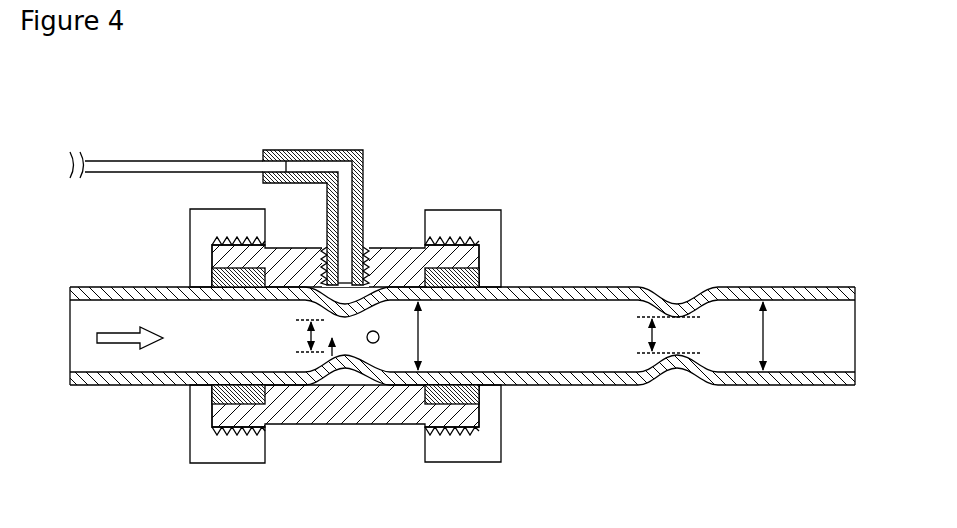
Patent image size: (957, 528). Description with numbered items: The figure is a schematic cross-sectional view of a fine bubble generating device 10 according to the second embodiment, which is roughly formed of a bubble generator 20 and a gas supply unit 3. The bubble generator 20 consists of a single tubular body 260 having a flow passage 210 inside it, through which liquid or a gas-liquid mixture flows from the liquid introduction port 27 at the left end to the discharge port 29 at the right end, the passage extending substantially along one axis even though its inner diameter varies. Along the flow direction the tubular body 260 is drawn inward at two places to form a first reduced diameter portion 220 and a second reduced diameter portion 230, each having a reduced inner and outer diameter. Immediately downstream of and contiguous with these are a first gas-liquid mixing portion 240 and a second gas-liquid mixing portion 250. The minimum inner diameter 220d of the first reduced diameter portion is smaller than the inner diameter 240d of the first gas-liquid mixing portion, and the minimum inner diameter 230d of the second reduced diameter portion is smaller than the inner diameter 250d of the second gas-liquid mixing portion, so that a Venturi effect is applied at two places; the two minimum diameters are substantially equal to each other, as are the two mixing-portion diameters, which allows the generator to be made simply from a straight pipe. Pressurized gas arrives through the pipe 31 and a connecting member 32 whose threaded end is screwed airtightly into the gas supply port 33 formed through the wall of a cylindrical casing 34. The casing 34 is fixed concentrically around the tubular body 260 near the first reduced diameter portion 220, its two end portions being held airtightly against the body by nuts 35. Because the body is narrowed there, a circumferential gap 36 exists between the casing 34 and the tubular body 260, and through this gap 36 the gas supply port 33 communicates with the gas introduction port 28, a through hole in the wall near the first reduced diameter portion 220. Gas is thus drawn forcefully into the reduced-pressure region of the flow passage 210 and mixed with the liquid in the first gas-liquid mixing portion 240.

The fine bubble generating device 10 is at (560, 115).
The gas supply unit 3 is at (266, 126).
The pipe 31 is at (130, 160).
The connecting member 32 is at (327, 150).
The gas supply port 33 is at (352, 283).
The casing 34 is at (412, 248).
The nuts 35 is at (470, 210).
The gap 36 is at (322, 297).
The bubble generator 20 is at (552, 270).
The liquid introduction port 27 is at (70, 318).
The discharge port 29 is at (856, 345).
The gas introduction port 28 is at (382, 342).
The flow passage 210 is at (172, 325).
The first reduced diameter portion 220 is at (350, 357).
The second reduced diameter portion 230 is at (671, 334).
The first gas-liquid mixing portion 240 is at (506, 346).
The second gas-liquid mixing portion 250 is at (745, 318).
The tubular body 260 is at (582, 385).
The minimum inner diameter of the first reduced diameter portion 220d is at (291, 338).
The minimum inner diameter of the second reduced diameter portion 230d is at (646, 335).
The inner diameter of the first gas-liquid mixing portion 240d is at (446, 336).
The inner diameter of the second gas-liquid mixing portion 250d is at (792, 336).